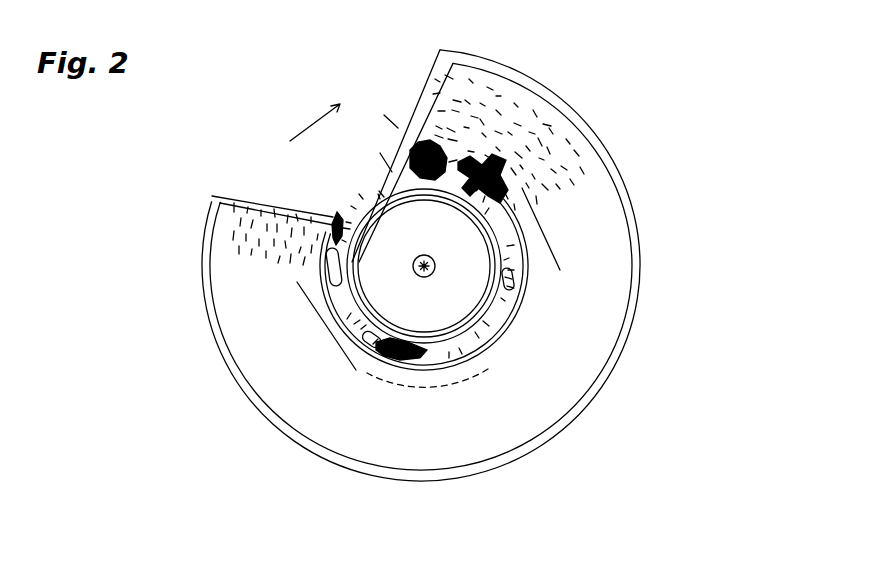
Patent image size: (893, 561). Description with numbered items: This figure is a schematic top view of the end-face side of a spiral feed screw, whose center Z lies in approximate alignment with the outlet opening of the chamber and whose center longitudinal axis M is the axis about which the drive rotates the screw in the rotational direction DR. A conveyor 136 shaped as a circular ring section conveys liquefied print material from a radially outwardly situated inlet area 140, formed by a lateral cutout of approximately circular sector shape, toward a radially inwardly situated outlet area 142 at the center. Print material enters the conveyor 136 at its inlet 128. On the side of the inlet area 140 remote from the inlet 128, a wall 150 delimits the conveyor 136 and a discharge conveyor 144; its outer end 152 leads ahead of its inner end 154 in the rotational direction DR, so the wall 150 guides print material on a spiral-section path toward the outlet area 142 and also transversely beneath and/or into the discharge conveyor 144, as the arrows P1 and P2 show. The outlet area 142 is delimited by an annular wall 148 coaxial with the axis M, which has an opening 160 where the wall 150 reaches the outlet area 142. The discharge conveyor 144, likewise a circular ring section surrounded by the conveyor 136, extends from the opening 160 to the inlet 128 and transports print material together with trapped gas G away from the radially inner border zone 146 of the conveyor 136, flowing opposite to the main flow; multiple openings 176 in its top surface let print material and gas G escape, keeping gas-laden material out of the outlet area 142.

The inlet 128 is at (212, 204).
The conveyor 136 is at (203, 267).
The inlet area 140 is at (315, 167).
The outlet area 142 is at (480, 262).
The discharge conveyor 144 is at (478, 340).
The radially inner border zone 146 is at (528, 264).
The annular wall 148 is at (448, 340).
The wall 150 is at (440, 135).
The outer end 152 is at (453, 63).
The inner end 154 is at (366, 228).
The opening 160 is at (530, 246).
The openings 176 is at (385, 334).
The gas G is at (337, 214).
The center longitudinal axis M is at (420, 277).
The center Z is at (412, 268).
The rotational direction DR is at (297, 138).
The arrow P1 is at (370, 155).
The arrow P2 is at (376, 117).